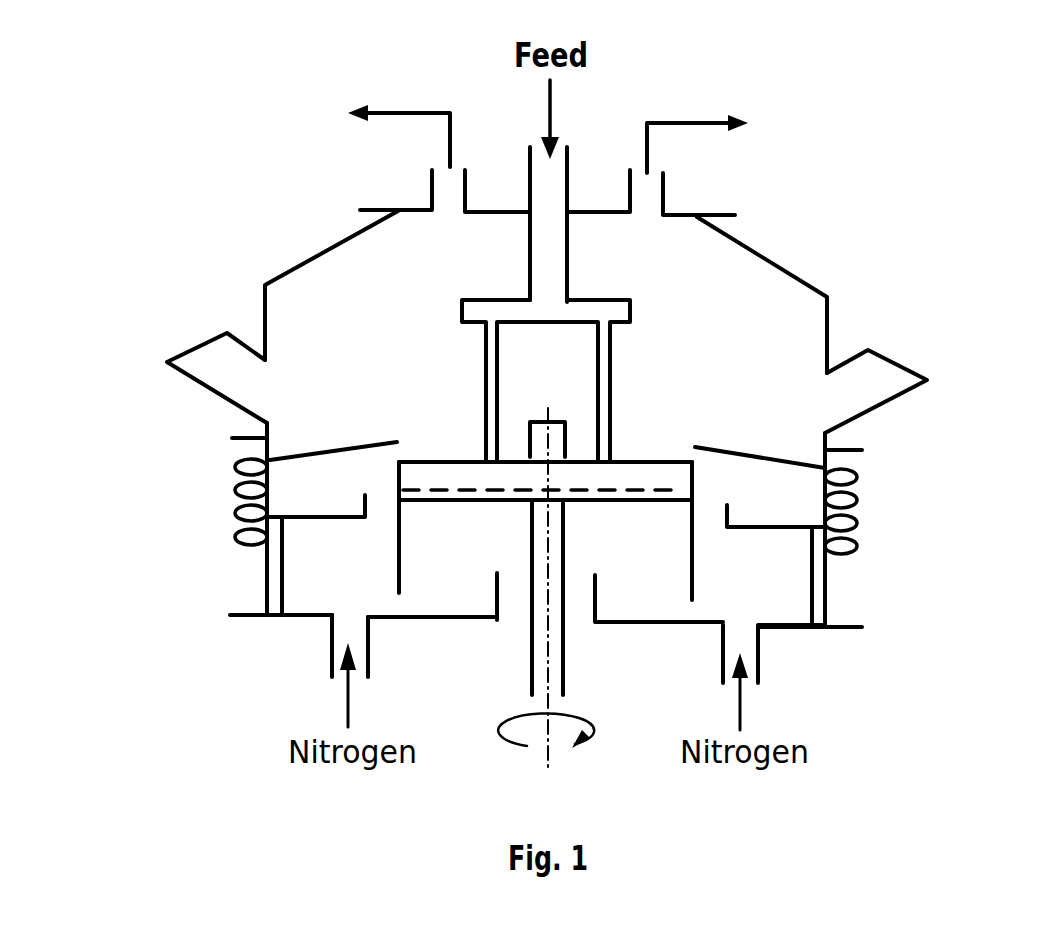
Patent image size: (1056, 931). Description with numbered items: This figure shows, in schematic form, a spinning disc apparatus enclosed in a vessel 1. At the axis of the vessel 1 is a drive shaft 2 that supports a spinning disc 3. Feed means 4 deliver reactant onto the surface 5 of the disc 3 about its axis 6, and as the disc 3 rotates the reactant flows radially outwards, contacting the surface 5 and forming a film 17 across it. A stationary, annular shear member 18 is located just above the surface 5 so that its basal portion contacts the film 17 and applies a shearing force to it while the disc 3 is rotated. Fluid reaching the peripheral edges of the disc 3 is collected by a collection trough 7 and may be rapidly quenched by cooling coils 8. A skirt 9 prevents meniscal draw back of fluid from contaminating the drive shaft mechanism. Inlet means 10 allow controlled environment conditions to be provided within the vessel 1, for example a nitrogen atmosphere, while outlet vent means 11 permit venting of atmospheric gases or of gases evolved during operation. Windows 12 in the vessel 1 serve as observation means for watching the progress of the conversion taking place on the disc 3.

The vessel 1 is at (303, 260).
The drive shaft 2 is at (535, 442).
The spinning disc 3 is at (627, 483).
The feed means 4 is at (562, 282).
The surface 5 is at (480, 462).
The axis 6 is at (547, 747).
The collection trough 7 is at (770, 530).
The cooling coils 8 is at (857, 500).
The skirt 9 is at (398, 550).
The inlet means 10 is at (370, 655).
The outlet vent means 11 is at (467, 180).
The windows 12 is at (173, 350).
The film 17 is at (492, 490).
The shear member 18 is at (450, 490).